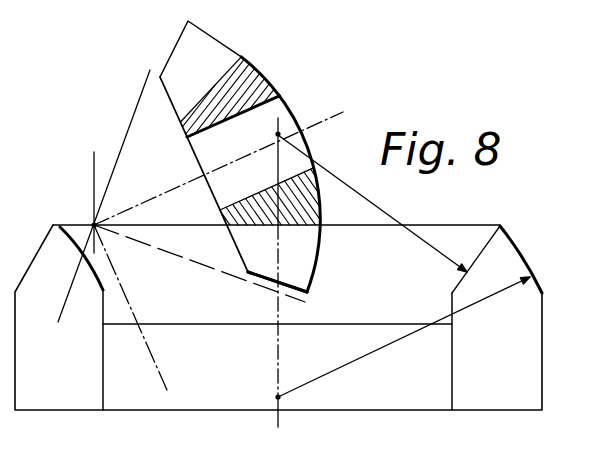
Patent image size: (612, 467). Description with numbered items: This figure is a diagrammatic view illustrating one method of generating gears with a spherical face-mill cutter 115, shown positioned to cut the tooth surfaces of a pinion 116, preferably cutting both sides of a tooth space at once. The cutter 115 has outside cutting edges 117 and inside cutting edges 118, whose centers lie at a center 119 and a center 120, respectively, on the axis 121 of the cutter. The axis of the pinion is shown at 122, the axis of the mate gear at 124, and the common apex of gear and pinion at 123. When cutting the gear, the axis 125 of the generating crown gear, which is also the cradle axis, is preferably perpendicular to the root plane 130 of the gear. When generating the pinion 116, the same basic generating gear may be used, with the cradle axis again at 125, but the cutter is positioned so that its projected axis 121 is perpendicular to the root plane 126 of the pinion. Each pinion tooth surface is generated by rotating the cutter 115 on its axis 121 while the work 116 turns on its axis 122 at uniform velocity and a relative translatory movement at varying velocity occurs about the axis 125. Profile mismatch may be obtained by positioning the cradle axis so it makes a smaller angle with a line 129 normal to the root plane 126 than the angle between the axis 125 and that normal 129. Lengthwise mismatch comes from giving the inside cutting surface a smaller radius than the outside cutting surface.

The spherical face-mill cutter 115 is at (396, 398).
The pinion 116 is at (265, 85).
The outside cutting edges 117 is at (521, 252).
The inside cutting edges 118 is at (480, 255).
The center of outside cutting edges 119 is at (277, 397).
The center of inside cutting edges 120 is at (280, 132).
The axis of the cutter 121 is at (279, 351).
The axis of the pinion 122 is at (166, 192).
The common apex of gear and pinion 123 is at (93, 223).
The axis of the mate gear 124 is at (119, 281).
The axis of the generating crown gear 125 is at (124, 140).
The root plane of the pinion 126 is at (298, 228).
The line perpendicular to the root plane of the pinion 129 is at (94, 172).
The root plane of the gear 130 is at (252, 283).